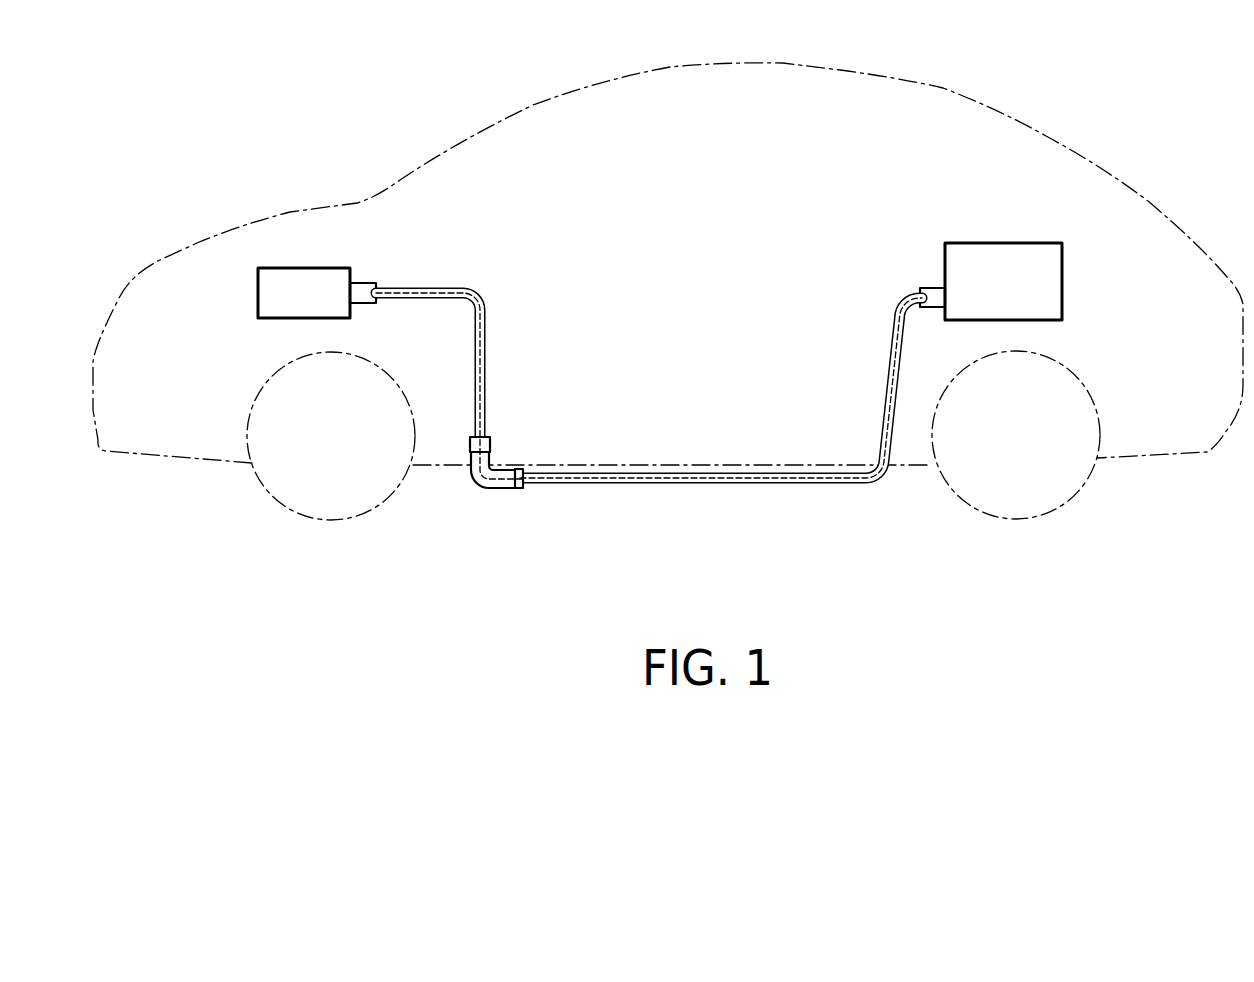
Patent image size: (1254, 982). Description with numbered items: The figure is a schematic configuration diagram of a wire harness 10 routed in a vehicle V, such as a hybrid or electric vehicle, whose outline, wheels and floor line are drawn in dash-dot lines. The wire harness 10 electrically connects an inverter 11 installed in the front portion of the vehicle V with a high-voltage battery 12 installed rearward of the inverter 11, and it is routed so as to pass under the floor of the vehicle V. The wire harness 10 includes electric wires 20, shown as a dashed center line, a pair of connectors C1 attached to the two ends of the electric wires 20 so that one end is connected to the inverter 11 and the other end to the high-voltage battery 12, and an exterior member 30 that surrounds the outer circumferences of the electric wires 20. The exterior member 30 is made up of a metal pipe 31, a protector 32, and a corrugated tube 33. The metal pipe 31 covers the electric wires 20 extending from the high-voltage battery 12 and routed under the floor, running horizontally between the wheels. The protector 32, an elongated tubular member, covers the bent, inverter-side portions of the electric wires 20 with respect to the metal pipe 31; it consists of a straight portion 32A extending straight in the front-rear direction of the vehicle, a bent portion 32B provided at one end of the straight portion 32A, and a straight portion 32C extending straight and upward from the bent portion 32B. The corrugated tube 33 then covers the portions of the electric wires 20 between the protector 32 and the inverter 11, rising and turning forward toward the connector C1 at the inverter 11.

The vehicle V is at (810, 64).
The inverter 11 is at (305, 268).
The high-voltage battery 12 is at (1000, 243).
The connector C1 is at (372, 283).
The wire harness 10 is at (649, 446).
The electric wire 20 is at (486, 312).
The exterior member 30 is at (649, 446).
The metal pipe 31 is at (710, 486).
The protector 32 is at (494, 518).
The straight portion 32A is at (549, 511).
The bent portion 32B is at (486, 490).
The straight portion 32C is at (471, 441).
The corrugated tube 33 is at (486, 388).